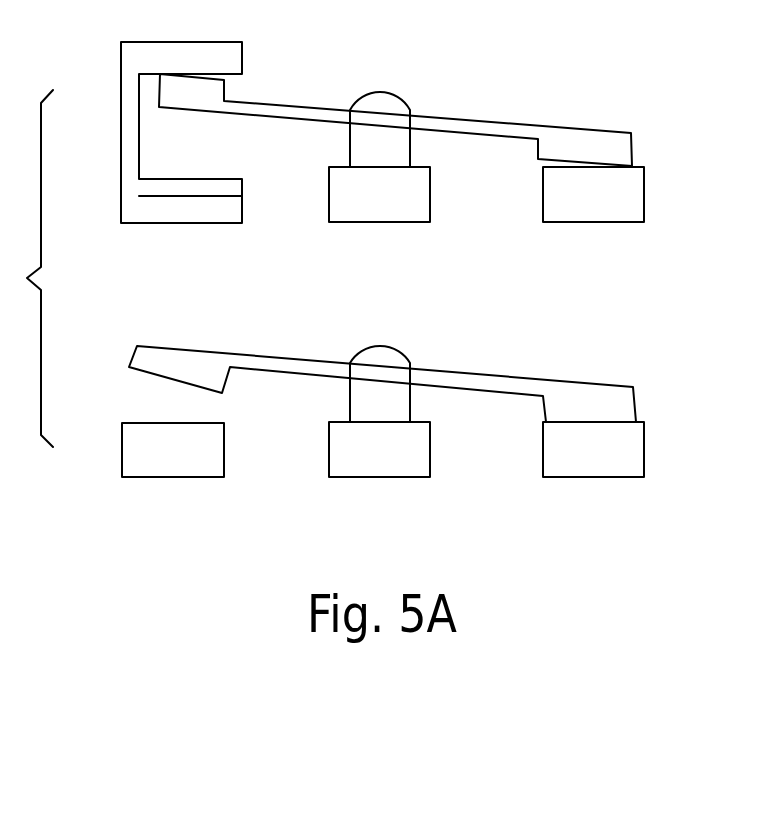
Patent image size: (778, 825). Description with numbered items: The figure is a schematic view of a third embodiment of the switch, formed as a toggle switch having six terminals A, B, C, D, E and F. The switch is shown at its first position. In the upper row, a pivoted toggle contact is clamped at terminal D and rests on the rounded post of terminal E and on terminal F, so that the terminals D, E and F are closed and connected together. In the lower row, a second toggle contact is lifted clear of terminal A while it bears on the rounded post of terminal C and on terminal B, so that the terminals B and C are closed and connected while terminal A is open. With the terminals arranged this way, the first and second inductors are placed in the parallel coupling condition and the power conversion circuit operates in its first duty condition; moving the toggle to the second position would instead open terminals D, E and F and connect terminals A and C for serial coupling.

The terminal A is at (173, 471).
The terminal B is at (593, 470).
The terminal C is at (379, 432).
The terminal D is at (181, 155).
The terminal E is at (379, 180).
The terminal F is at (593, 218).